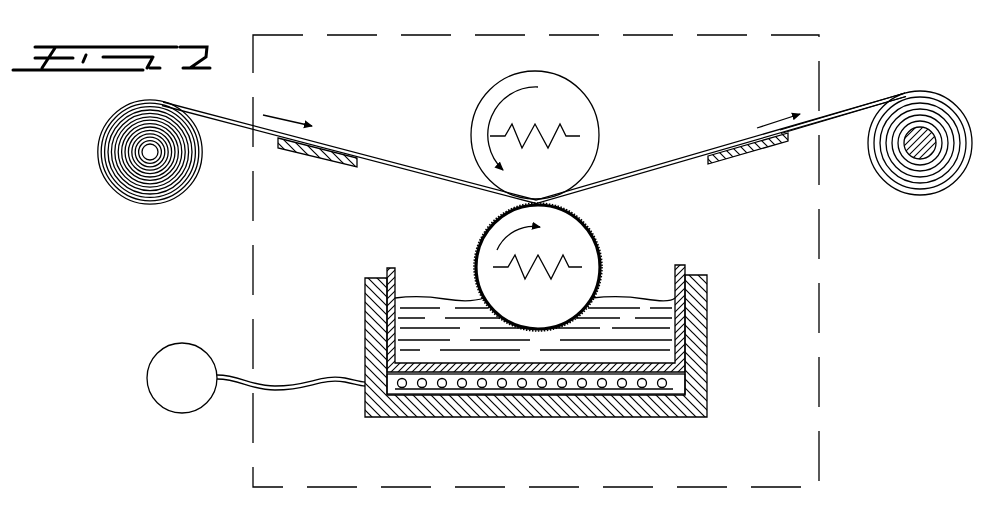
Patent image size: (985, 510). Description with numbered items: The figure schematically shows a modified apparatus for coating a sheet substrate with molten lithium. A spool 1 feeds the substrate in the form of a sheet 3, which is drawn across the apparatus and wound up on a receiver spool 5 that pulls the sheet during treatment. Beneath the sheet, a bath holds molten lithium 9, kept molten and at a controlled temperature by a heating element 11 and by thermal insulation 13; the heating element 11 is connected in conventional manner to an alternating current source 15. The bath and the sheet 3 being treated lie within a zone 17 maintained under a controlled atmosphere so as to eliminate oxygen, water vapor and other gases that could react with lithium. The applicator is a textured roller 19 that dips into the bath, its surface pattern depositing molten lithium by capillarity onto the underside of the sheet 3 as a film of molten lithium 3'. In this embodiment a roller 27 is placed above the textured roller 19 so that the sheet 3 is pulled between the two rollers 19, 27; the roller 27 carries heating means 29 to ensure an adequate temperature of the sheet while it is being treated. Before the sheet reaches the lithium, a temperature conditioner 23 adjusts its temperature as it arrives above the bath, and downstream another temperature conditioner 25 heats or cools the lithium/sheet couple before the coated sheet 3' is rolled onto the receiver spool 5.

The spool 1 is at (145, 204).
The sheet 3 is at (534, 130).
The film of molten lithium 3' is at (843, 160).
The receiver spool 5 is at (918, 196).
The molten lithium 9 is at (640, 318).
The heating element 11 is at (662, 378).
The thermal insulation 13 is at (682, 407).
The alternating current source 15 is at (197, 402).
The controlled-atmosphere zone 17 is at (820, 402).
The textured roller 19 is at (600, 240).
The temperature conditioner 23 is at (320, 160).
The temperature conditioner 25 is at (767, 157).
The roller 27 is at (587, 93).
The heating means 29 is at (522, 125).